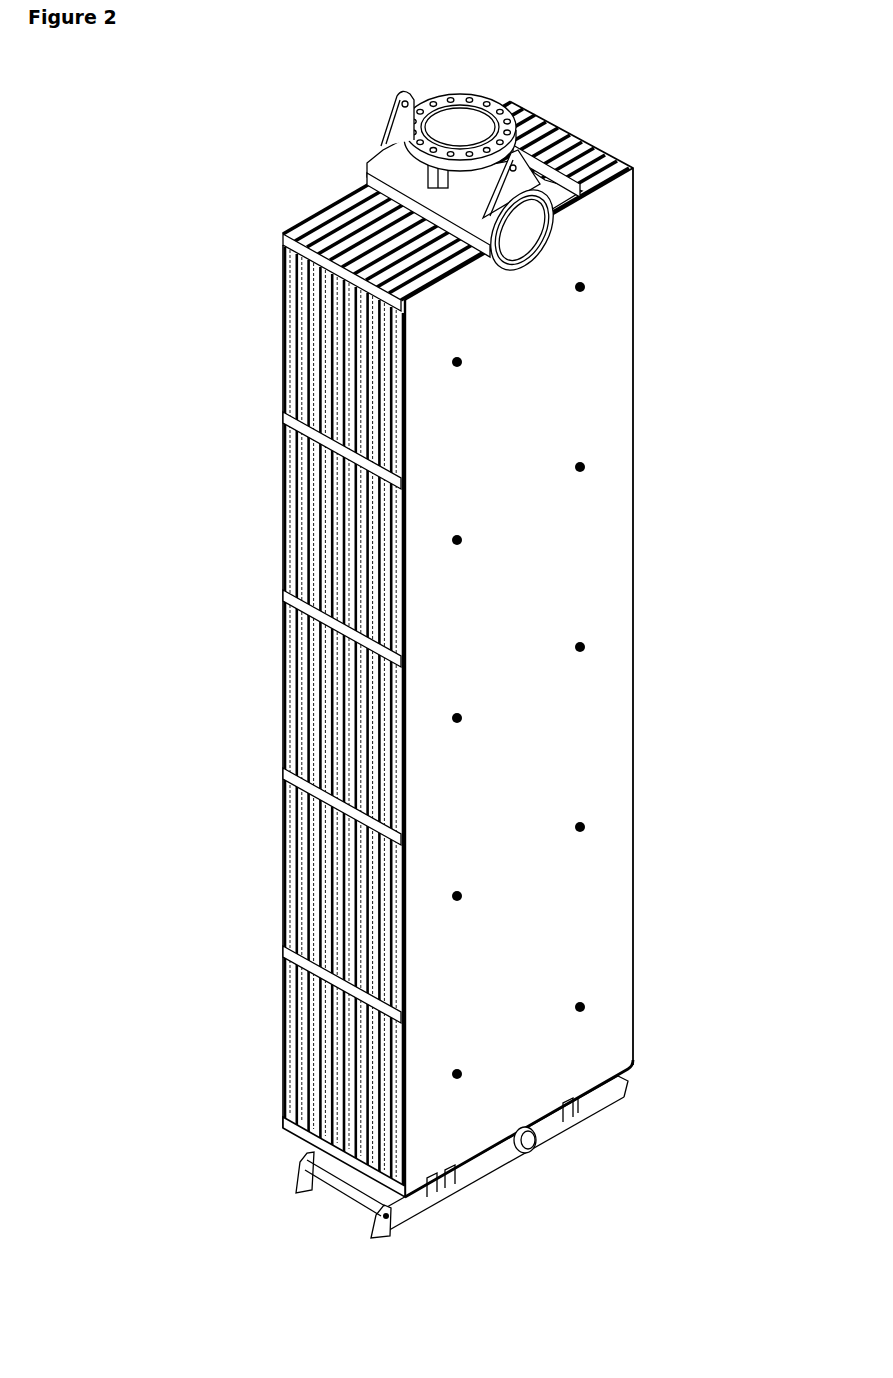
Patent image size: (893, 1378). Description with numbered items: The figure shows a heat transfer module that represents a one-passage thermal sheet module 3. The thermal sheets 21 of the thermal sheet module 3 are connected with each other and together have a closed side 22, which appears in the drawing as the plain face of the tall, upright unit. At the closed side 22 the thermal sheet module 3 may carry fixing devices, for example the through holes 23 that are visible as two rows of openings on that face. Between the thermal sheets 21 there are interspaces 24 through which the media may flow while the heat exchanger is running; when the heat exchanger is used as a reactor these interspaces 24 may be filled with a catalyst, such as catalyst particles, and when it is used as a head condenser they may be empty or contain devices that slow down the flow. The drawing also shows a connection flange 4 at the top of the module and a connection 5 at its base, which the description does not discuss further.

The thermal sheet module 3 is at (622, 116).
The inlet connection flange 4 is at (437, 125).
The drain connection 5 is at (555, 1145).
The thermal sheets 21 is at (287, 328).
The closed side 22 is at (590, 341).
The through holes 23 is at (585, 468).
The interspaces 24 is at (293, 483).